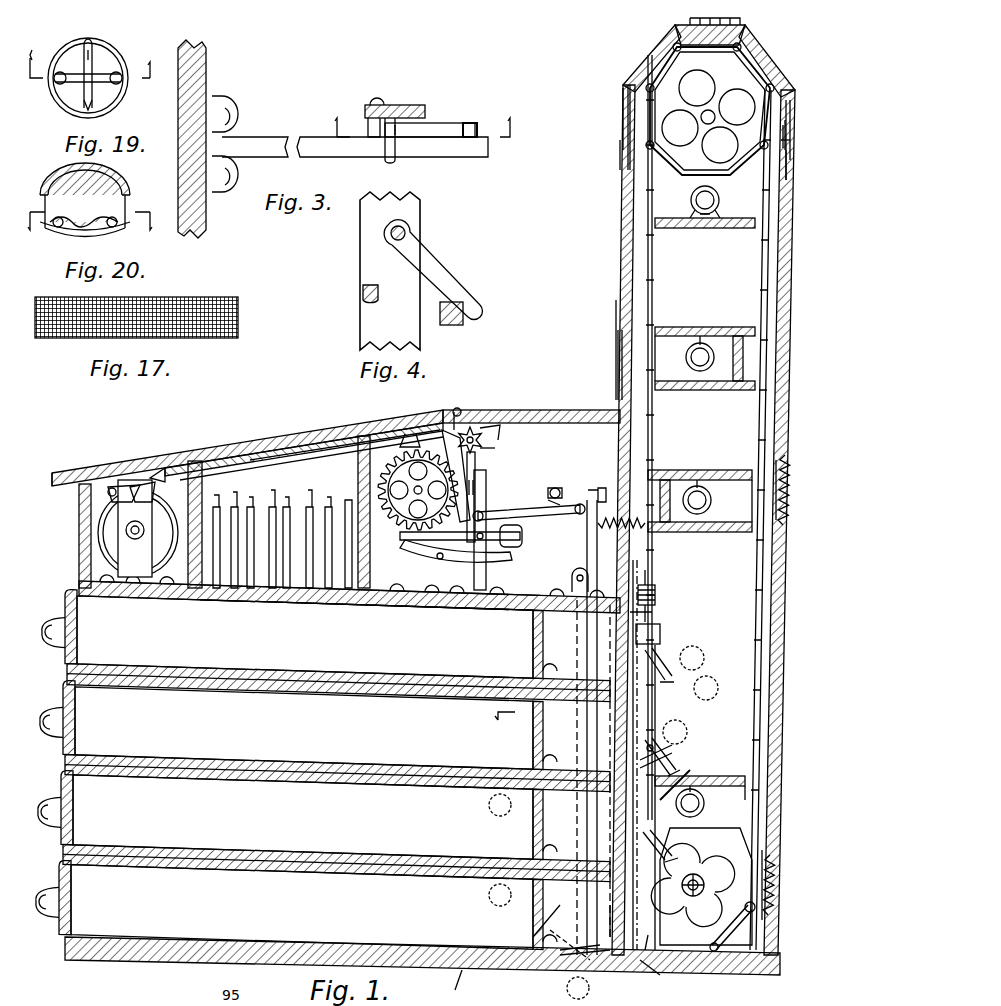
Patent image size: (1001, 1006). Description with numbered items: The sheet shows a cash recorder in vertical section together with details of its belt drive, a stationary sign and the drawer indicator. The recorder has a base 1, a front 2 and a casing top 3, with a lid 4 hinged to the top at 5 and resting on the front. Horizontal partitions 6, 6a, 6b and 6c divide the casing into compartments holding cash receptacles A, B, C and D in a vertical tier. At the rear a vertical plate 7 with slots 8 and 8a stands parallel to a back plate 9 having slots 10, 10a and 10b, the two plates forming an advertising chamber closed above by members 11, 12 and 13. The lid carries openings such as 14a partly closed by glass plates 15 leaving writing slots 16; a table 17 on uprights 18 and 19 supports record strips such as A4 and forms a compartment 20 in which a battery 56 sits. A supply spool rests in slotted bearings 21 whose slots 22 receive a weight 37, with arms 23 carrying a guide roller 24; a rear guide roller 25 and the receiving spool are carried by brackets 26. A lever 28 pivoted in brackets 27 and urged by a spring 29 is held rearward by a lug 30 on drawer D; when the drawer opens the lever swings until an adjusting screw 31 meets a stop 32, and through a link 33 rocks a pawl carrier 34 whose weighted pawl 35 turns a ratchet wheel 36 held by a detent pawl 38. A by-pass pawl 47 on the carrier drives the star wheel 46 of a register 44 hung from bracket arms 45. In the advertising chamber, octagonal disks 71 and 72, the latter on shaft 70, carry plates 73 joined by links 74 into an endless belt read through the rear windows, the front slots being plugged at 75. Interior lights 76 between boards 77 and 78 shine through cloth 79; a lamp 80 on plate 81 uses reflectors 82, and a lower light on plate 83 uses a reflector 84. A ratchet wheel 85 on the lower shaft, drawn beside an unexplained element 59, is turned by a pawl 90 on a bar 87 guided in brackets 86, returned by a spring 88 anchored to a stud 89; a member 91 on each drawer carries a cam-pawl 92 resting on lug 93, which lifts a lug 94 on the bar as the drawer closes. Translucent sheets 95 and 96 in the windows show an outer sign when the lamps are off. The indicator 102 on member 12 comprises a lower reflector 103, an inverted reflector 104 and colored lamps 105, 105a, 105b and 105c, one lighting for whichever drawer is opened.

In FIG. 1, the base 1 is at (463, 986).
In FIG. 1, the front 2 is at (79, 538).
In FIG. 1, the top of the casing 3 is at (566, 408).
In FIG. 3, the lid 4 is at (423, 121).
In FIG. 1, the lid 4 is at (330, 430).
In FIG. 1, the hinge 5 is at (466, 401).
In FIG. 1, the partition 6 is at (295, 596).
In FIG. 1, the partition 6a is at (318, 686).
In FIG. 1, the partition 6b is at (318, 776).
In FIG. 1, the partition 6c is at (318, 866).
In FIG. 1, the vertically extending plate 7 is at (618, 455).
In FIG. 1, the transverse slot 8 is at (622, 118).
In FIG. 1, the transverse slot 8a is at (616, 346).
In FIG. 1, the back plate 9 is at (790, 387).
In FIG. 1, the transverse slot 10 is at (790, 136).
In FIG. 1, the transverse slot 10a is at (777, 490).
In FIG. 1, the transverse slot 10b is at (770, 888).
In FIG. 1, the connecting member 11 is at (645, 58).
In FIG. 1, the connecting member 12 is at (676, 38).
In FIG. 1, the connecting member 13 is at (775, 58).
In FIG. 1, the rectangular opening 14a is at (200, 465).
In FIG. 1, the transparent plate 15 is at (225, 467).
In FIG. 1, the slot 16 is at (162, 470).
In FIG. 1, the table 17 is at (286, 450).
In FIG. 1, the upright 18 is at (202, 486).
In FIG. 20, the upright 19 is at (96, 229).
In FIG. 1, the upright 19 is at (358, 480).
In FIG. 19, the transverse compartment 20 is at (100, 57).
In FIG. 1, the transverse compartment 20 is at (275, 492).
In FIG. 1, the slotted bearing 21 is at (115, 555).
In FIG. 1, the slot 22 is at (125, 516).
In FIG. 1, the arm 23 is at (110, 494).
In FIG. 1, the guide roller 24 is at (110, 476).
In FIG. 1, the guide roller 25 is at (445, 422).
In FIG. 1, the rear journal bracket 26 is at (415, 580).
In FIG. 1, the bracket 27 is at (572, 584).
In FIG. 1, the lever 28 is at (585, 548).
In FIG. 1, the spring 29 is at (630, 530).
In FIG. 1, the lug 30 is at (570, 964).
In FIG. 1, the adjusting screw 31 is at (556, 486).
In FIG. 1, the stationary stop 32 is at (600, 486).
In FIG. 1, the link 33 is at (532, 508).
In FIG. 1, the rocking pawl carrier 34 is at (486, 490).
In FIG. 1, the weighted pawl 35 is at (522, 536).
In FIG. 1, the ratchet wheel 36 is at (390, 430).
In FIG. 1, the weight 37 is at (150, 490).
In FIG. 1, the detent pawl 38 is at (398, 540).
In FIG. 1, the special register 44 is at (490, 432).
In FIG. 1, the bracket arm 45 is at (498, 432).
In FIG. 1, the star wheel 46 is at (495, 450).
In FIG. 1, the by-pass pawl 47 is at (476, 468).
In FIG. 1, the battery 56 is at (258, 596).
In FIG. 1, the cam 59 is at (706, 886).
In FIG. 1, the shaft 70 is at (714, 118).
In FIG. 1, the disk 71 is at (713, 840).
In FIG. 1, the disk 72 is at (750, 128).
In FIG. 1, the advertising plate 73 is at (772, 262).
In FIG. 1, the link 74 is at (790, 152).
In FIG. 1, the plug 75 is at (622, 138).
In FIG. 1, the interior light 76 is at (688, 357).
In FIG. 1, the horizontal partition board 77 is at (712, 327).
In FIG. 1, the vertical partition board 78 is at (738, 378).
In FIG. 1, the translucent material 79 is at (660, 340).
In FIG. 1, the lamp 80 is at (708, 228).
In FIG. 1, the partition plate 81 is at (680, 229).
In FIG. 1, the reflector 82 is at (624, 85).
In FIG. 1, the partition plate 83 is at (745, 800).
In FIG. 1, the reflector 84 is at (675, 790).
In FIG. 1, the ratchet wheel 85 is at (728, 925).
In FIG. 1, the bracket 86 is at (660, 636).
In FIG. 3, the vertically reciprocating bar 87 is at (410, 105).
In FIG. 4, the vertically reciprocating bar 87 is at (360, 263).
In FIG. 1, the vertically reciprocating bar 87 is at (650, 704).
In FIG. 1, the spring 88 is at (656, 597).
In FIG. 1, the stud 89 is at (652, 616).
In FIG. 1, the operating pawl 90 is at (640, 897).
In FIG. 3, the member 91 is at (462, 155).
In FIG. 1, the member 91 is at (533, 660).
In FIG. 3, the by-pass cam-pawl 92 is at (440, 130).
In FIG. 4, the by-pass cam-pawl 92 is at (436, 275).
In FIG. 1, the by-pass cam-pawl 92 is at (668, 666).
In FIG. 3, the lug 93 is at (470, 127).
In FIG. 4, the lug 93 is at (465, 320).
In FIG. 1, the lug 93 is at (676, 682).
In FIG. 3, the lug 94 is at (368, 125).
In FIG. 4, the lug 94 is at (363, 294).
In FIG. 1, the lug 94 is at (680, 985).
In FIG. 17, the translucent sheet 95 is at (136, 307).
In FIG. 1, the translucent sheet 95 is at (788, 126).
In FIG. 1, the sheet 96 is at (786, 98).
In FIG. 1, the indicator 102 is at (745, 30).
In FIG. 19, the saucer shaped reflector 103 is at (75, 58).
In FIG. 20, the saucer shaped reflector 103 is at (70, 230).
In FIG. 20, the inverted reflector 104 is at (110, 178).
In FIG. 19, the lamp 105 is at (95, 99).
In FIG. 19, the lamp 105a is at (120, 78).
In FIG. 20, the lamp 105a is at (118, 212).
In FIG. 19, the lamp 105b is at (92, 53).
In FIG. 19, the lamp 105c is at (78, 102).
In FIG. 20, the lamp 105c is at (70, 222).
In FIG. 3, the cash receptacle A is at (210, 78).
In FIG. 1, the cash receptacle A is at (104, 628).
In FIG. 1, the record strip A4 is at (410, 417).
In FIG. 1, the cash receptacle B is at (102, 719).
In FIG. 1, the cash receptacle C is at (101, 809).
In FIG. 1, the cash receptacle D is at (101, 899).